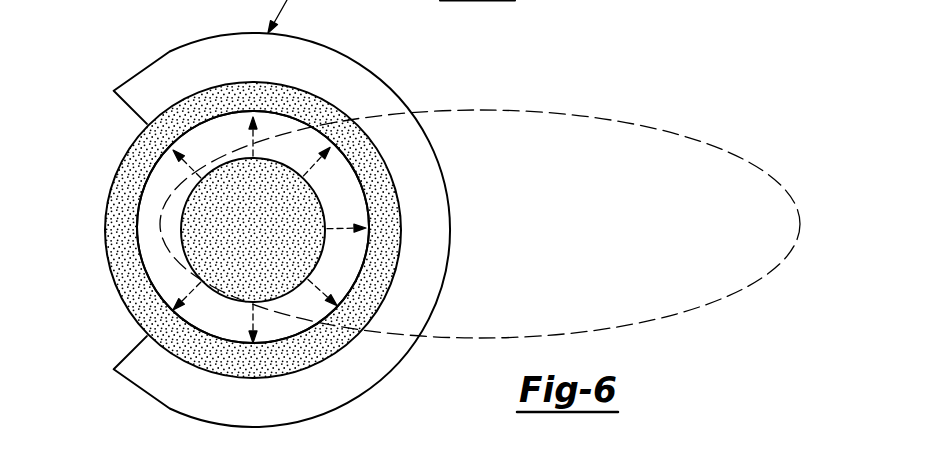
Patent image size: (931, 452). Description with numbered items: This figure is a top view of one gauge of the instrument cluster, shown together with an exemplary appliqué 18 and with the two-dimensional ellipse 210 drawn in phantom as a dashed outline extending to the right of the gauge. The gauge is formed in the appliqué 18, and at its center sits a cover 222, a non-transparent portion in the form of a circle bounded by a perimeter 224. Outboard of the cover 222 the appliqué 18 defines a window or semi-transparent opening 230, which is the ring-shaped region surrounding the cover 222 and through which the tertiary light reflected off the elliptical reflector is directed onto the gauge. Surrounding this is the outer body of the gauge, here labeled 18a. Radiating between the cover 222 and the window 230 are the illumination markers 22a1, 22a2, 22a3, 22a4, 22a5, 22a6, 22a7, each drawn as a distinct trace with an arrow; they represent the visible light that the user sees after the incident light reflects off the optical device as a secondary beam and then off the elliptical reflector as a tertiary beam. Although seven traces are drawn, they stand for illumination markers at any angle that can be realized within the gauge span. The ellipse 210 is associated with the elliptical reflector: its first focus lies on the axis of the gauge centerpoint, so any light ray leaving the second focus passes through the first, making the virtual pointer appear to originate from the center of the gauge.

The outer housing ring 18a is at (141, 35).
The appliqué 18 is at (122, 171).
The window 230 is at (148, 237).
The cover 222 is at (296, 201).
The perimeter 224 is at (326, 263).
The ellipse 210 is at (527, 108).
The illumination marker 22a1 is at (186, 163).
The illumination marker 22a2 is at (256, 138).
The illumination marker 22a3 is at (320, 166).
The illumination marker 22a4 is at (348, 228).
The illumination marker 22a5 is at (318, 290).
The illumination marker 22a6 is at (248, 322).
The illumination marker 22a7 is at (186, 298).